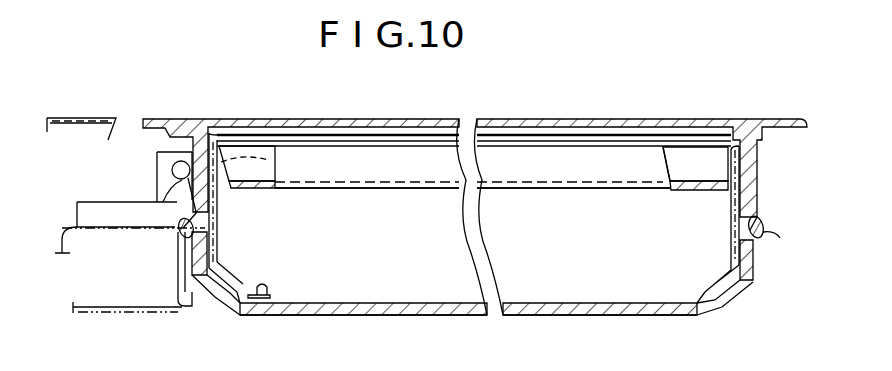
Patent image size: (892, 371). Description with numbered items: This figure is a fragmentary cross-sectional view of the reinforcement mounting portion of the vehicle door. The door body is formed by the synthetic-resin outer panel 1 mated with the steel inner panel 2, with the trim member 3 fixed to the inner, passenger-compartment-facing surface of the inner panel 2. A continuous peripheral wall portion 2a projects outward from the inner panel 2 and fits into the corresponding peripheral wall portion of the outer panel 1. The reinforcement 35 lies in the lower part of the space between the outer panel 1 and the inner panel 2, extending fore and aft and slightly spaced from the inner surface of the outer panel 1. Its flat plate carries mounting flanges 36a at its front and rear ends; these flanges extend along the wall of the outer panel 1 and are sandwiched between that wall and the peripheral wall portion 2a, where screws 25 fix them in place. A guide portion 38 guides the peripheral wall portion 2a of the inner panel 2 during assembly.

The outer panel 1 is at (352, 116).
The inner panel 2 is at (383, 298).
The peripheral wall portion 2a is at (220, 220).
The trim member 3 is at (320, 320).
The screws 25 is at (272, 152).
The reinforcement 35 is at (523, 194).
The mounting flanges 36a is at (217, 202).
The guide portion 38 is at (722, 181).